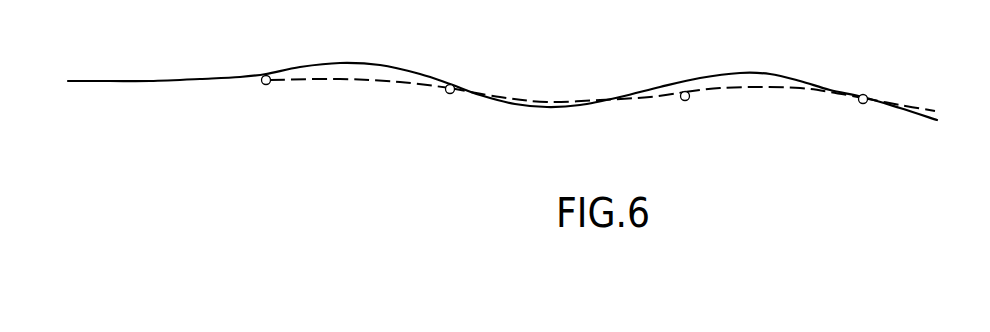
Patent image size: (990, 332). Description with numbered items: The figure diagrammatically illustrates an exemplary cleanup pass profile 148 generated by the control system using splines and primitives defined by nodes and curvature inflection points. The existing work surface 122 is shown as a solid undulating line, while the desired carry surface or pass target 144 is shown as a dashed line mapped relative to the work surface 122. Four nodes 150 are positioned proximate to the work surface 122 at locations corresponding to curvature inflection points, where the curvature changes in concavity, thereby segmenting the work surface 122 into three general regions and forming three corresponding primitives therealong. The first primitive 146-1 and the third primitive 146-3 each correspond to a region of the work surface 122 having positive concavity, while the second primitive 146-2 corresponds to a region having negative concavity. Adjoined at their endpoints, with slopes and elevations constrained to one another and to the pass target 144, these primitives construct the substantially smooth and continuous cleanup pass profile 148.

The work surface 122 is at (375, 63).
The pass target 144 is at (603, 105).
The first primitive 146-1 is at (337, 81).
The second primitive 146-2 is at (567, 104).
The third primitive 146-3 is at (763, 90).
The cleanup pass profile 148 is at (540, 95).
The nodes 150 is at (260, 87).